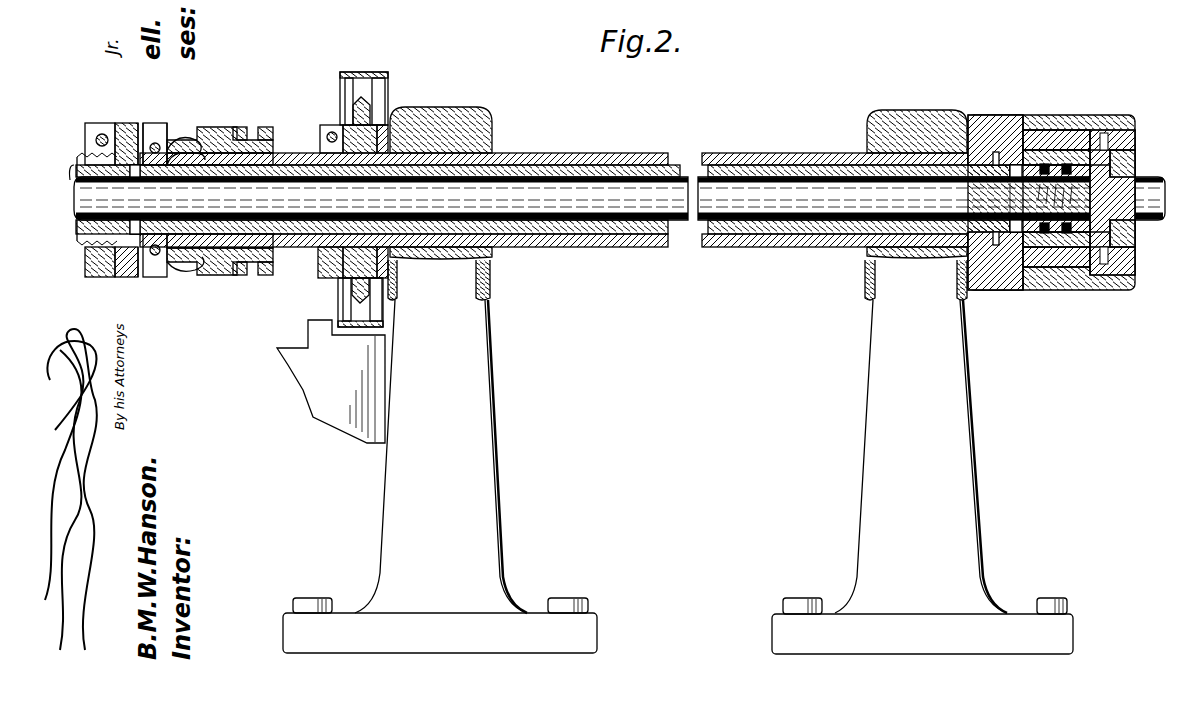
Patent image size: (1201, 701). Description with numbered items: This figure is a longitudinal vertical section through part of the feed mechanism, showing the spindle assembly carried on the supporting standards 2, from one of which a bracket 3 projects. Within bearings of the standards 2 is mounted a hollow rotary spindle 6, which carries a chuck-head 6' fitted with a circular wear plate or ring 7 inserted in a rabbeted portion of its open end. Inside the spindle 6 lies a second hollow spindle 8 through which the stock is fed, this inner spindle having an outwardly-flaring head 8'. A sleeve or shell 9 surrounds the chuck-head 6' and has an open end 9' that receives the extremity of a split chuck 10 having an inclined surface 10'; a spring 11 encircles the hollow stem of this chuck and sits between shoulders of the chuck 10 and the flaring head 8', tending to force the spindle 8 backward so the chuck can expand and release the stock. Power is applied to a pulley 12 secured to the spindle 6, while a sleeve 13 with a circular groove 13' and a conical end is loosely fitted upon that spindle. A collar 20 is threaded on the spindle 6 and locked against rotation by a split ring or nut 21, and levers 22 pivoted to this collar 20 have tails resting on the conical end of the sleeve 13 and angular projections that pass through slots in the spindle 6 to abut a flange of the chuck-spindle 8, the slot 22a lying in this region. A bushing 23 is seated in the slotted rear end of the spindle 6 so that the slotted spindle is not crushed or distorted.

The supporting standard 2 is at (678, 380).
The bracket 3 is at (331, 381).
The hollow rotary spindle 6 is at (541, 159).
The chuck-head 6' is at (995, 188).
The wear plate or ring 7 is at (1100, 140).
The hollow spindle 8 is at (543, 180).
The outwardly-flaring head 8' is at (1060, 165).
The sleeve or shell 9 is at (1051, 206).
The open end 9' is at (1138, 213).
The split chuck 10 is at (1096, 201).
The inclined surface 10' is at (1114, 170).
The spring 11 is at (1050, 270).
The pulley 12 is at (365, 72).
The sleeve 13 is at (247, 184).
The circular groove 13' is at (276, 184).
The collar 20 is at (123, 160).
The split ring or nut 21 is at (97, 123).
The levers 22 is at (172, 128).
The spring slot 22a is at (158, 165).
The bushing 23 is at (74, 172).